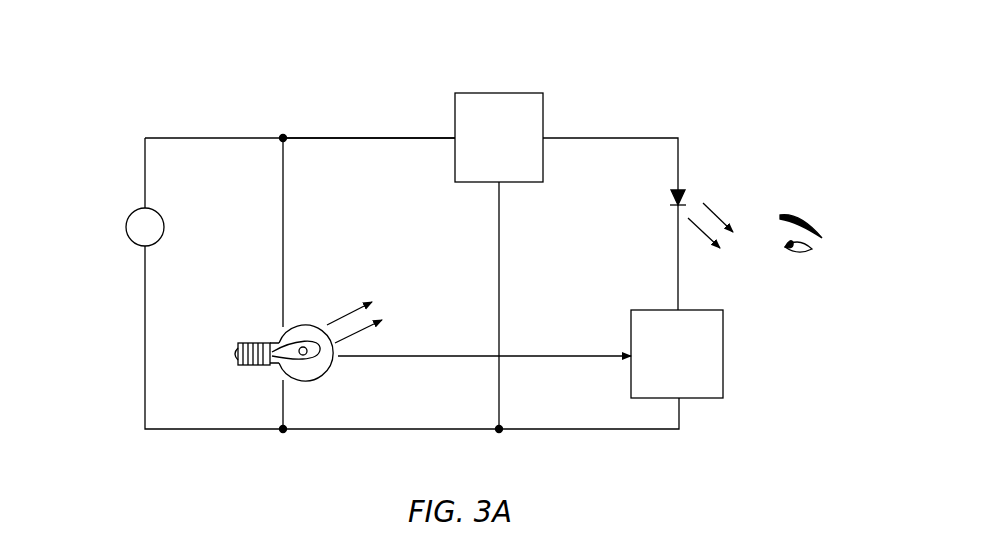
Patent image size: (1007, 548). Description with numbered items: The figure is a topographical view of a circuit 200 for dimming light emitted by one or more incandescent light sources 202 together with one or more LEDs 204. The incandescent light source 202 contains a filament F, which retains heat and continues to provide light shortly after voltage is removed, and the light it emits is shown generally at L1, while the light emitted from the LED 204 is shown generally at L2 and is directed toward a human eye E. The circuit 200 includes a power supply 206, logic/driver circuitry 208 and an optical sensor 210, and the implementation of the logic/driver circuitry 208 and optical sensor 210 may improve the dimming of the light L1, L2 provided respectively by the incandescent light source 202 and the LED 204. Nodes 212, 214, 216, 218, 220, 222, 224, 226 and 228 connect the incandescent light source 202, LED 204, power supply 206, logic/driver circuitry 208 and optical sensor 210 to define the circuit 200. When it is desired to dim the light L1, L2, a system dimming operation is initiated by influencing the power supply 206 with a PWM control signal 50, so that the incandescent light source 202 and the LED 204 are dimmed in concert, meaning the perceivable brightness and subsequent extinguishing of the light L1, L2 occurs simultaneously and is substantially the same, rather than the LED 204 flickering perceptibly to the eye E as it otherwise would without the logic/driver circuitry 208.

The PWM control signal 50 is at (125, 227).
The circuit 200 is at (764, 29).
The incandescent light source 202 is at (253, 326).
The LED 204 is at (689, 178).
The power supply 206 is at (163, 215).
The logic/driver circuitry 208 is at (530, 93).
The optical sensor 210 is at (725, 388).
The node 212 is at (160, 137).
The node 214 is at (283, 200).
The node 216 is at (335, 137).
The node 218 is at (658, 137).
The node 220 is at (678, 268).
The node 222 is at (499, 268).
The node 224 is at (543, 428).
The node 226 is at (372, 428).
The node 228 is at (232, 428).
The filament F is at (300, 366).
The human eye E is at (807, 196).
The light emitted from the incandescent light source L1 is at (550, 331).
The light emitted from the LED L2 is at (720, 233).